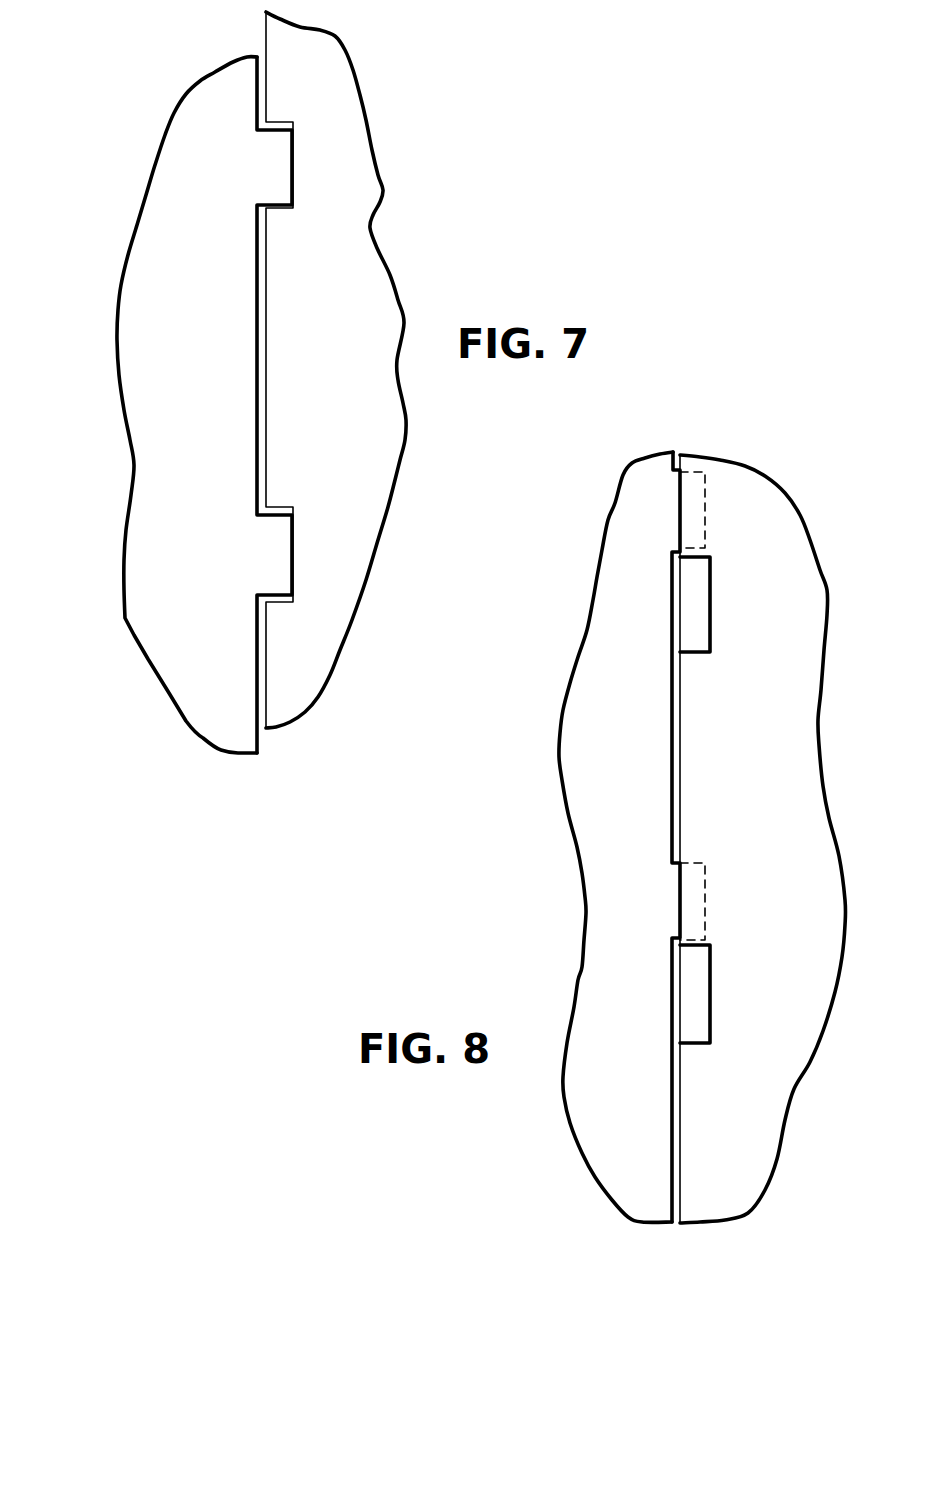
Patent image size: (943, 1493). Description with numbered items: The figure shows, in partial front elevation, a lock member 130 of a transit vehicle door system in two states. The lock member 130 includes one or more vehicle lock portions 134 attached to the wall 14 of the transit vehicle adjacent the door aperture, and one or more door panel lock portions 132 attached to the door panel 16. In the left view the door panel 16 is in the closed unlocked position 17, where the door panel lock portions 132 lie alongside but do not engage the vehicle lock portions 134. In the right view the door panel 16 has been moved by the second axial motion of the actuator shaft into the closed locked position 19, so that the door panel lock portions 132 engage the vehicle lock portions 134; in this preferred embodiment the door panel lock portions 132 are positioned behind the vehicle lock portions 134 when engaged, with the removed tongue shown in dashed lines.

In FIG. 7, the wall 14 is at (350, 374).
In FIG. 8, the wall 14 is at (763, 773).
In FIG. 7, the door panel 16 is at (197, 374).
In FIG. 8, the door panel 16 is at (633, 773).
In FIG. 7, the closed unlocked position 17 is at (125, 275).
In FIG. 8, the closed locked position 19 is at (592, 668).
In FIG. 7, the lock member 130 is at (262, 770).
In FIG. 8, the lock member 130 is at (676, 1238).
In FIG. 7, the door panel lock portions 132 is at (280, 157).
In FIG. 8, the door panel lock portions 132 is at (682, 519).
In FIG. 7, the vehicle lock portions 134 is at (277, 83).
In FIG. 8, the vehicle lock portions 134 is at (688, 488).